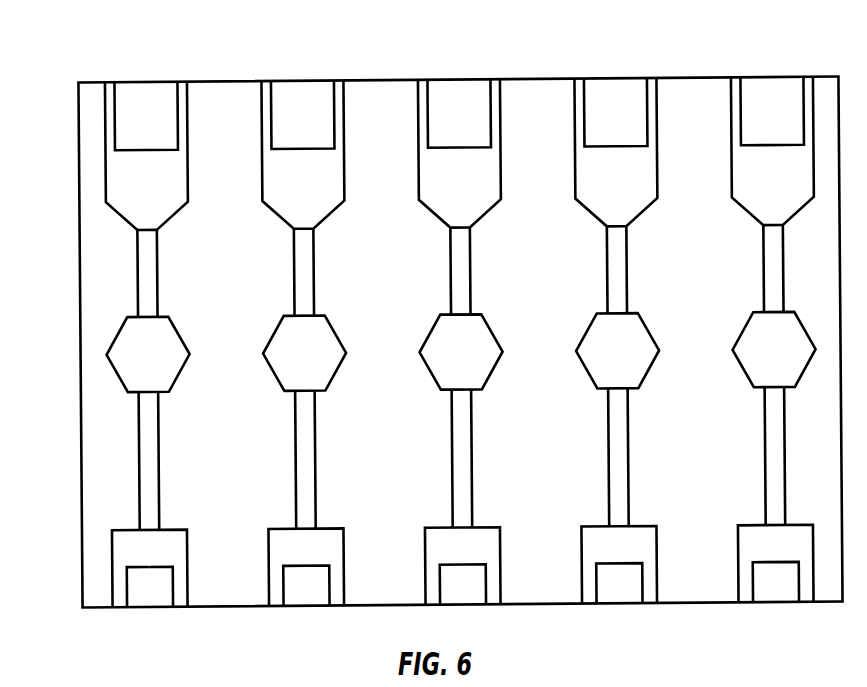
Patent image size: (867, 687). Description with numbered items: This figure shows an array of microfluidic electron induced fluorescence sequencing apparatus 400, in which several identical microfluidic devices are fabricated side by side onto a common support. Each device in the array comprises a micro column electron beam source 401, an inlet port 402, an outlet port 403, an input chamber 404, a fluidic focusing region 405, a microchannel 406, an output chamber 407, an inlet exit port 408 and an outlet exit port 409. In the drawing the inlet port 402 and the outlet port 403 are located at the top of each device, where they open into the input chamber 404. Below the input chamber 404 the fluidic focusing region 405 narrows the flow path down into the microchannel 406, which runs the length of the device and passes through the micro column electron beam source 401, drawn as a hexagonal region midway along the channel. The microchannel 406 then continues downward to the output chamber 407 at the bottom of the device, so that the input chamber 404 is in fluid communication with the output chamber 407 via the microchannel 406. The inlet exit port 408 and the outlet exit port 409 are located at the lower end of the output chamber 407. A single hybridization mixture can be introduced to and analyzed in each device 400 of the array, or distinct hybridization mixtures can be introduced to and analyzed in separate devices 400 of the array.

The microfluidic electron induced fluorescence sequencing apparatus 400 is at (508, 63).
The micro column electron beam source 401 is at (120, 358).
The inlet port 402 is at (108, 81).
The outlet port 403 is at (183, 81).
The input chamber 404 is at (117, 175).
The fluidic focusing region 405 is at (133, 210).
The microchannel 406 is at (145, 495).
The output chamber 407 is at (130, 550).
The inlet exit port 408 is at (122, 606).
The outlet exit port 409 is at (180, 606).